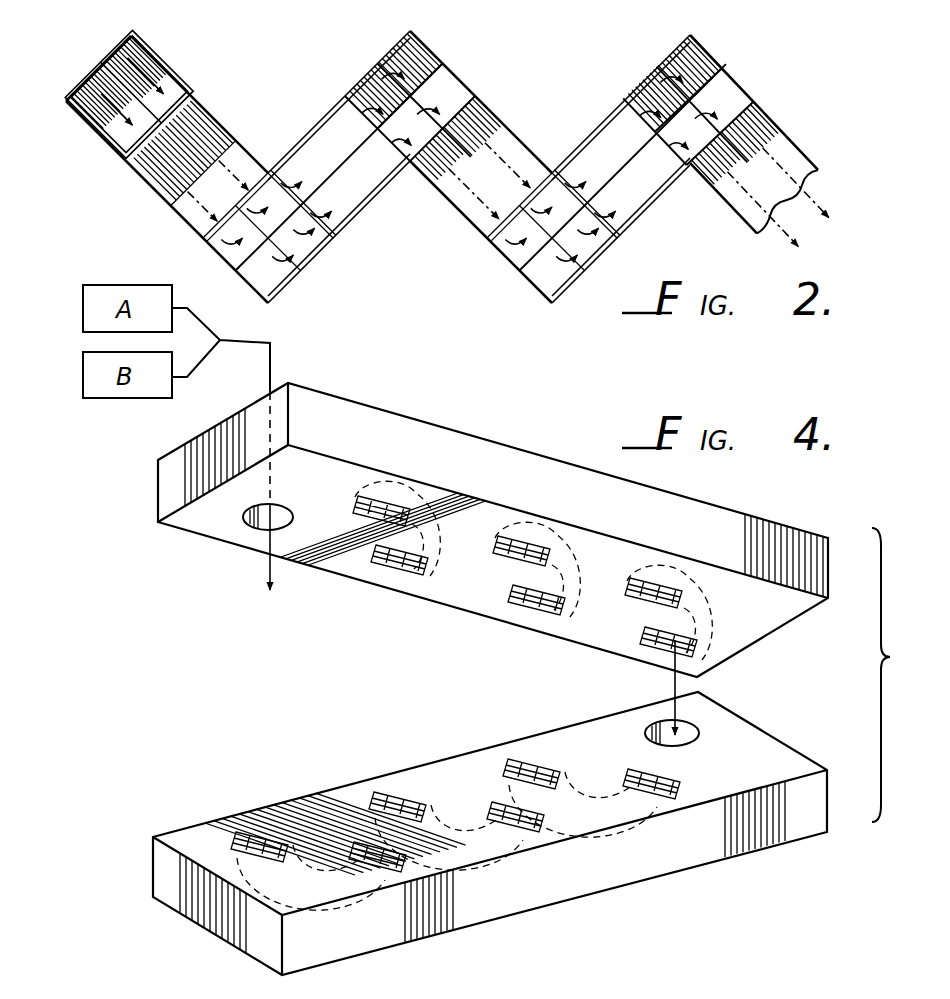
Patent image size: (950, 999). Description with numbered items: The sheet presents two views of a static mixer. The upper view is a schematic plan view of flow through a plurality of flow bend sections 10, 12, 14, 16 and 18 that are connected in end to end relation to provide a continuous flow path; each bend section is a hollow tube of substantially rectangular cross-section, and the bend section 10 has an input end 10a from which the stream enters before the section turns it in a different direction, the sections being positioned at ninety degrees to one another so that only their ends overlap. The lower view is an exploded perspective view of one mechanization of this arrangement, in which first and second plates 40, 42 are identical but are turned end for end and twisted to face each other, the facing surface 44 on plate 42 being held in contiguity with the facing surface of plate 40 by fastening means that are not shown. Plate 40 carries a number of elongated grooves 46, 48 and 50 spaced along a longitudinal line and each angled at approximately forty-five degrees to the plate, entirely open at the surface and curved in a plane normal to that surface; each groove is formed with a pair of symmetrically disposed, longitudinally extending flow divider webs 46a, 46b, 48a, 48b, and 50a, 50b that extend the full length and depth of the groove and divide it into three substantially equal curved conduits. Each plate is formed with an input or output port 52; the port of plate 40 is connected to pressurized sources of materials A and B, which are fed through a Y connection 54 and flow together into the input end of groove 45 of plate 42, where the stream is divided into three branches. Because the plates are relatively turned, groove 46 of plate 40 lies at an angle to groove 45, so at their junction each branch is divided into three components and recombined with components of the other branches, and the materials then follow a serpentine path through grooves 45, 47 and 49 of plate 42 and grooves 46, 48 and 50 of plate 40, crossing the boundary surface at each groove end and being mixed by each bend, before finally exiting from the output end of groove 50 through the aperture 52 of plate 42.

In FIG. 2, the input end 10a is at (96, 72).
In FIG. 2, the flow bend section 10 is at (216, 115).
In FIG. 2, the flow bend section 12 is at (316, 124).
In FIG. 2, the flow bend section 14 is at (488, 108).
In FIG. 2, the flow bend section 16 is at (598, 126).
In FIG. 2, the flow bend section 18 is at (787, 124).
In FIG. 4, the first plate 40 is at (355, 572).
In FIG. 4, the second plate 42 is at (475, 928).
In FIG. 4, the facing surface 44 is at (318, 798).
In FIG. 4, the groove 45 is at (327, 912).
In FIG. 4, the groove 46 is at (389, 504).
In FIG. 4, the flow divider web 46a is at (358, 506).
In FIG. 4, the flow divider web 46b is at (397, 497).
In FIG. 4, the second U-turn channel 47 is at (494, 875).
In FIG. 4, the groove 48 is at (523, 548).
In FIG. 4, the flow divider web 48a is at (498, 548).
In FIG. 4, the flow divider web 48b is at (540, 538).
In FIG. 4, the third U-turn channel 49 is at (622, 838).
In FIG. 4, the groove 50 is at (665, 591).
In FIG. 4, the flow divider web 50a is at (632, 587).
In FIG. 4, the flow divider web 50b is at (674, 580).
In FIG. 4, the input or output port 52 is at (250, 525).
In FIG. 4, the Y connection 54 is at (222, 340).